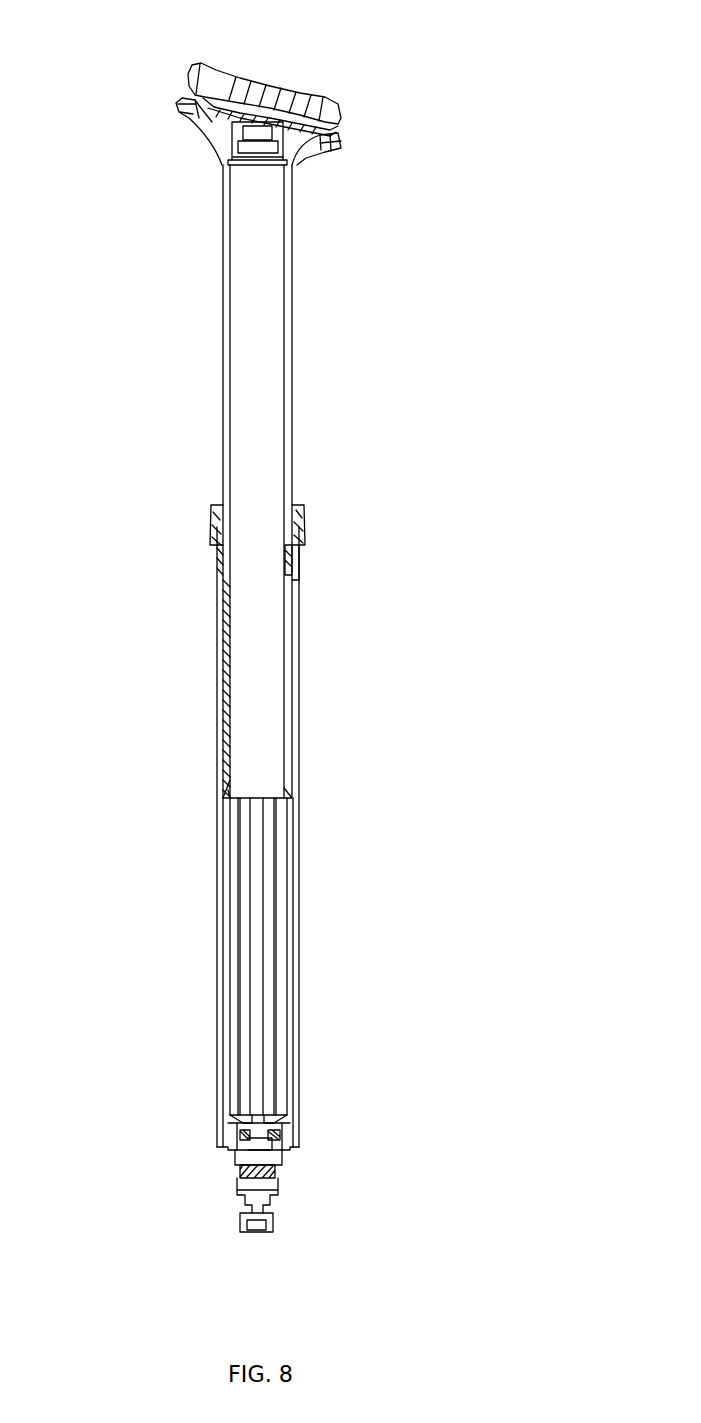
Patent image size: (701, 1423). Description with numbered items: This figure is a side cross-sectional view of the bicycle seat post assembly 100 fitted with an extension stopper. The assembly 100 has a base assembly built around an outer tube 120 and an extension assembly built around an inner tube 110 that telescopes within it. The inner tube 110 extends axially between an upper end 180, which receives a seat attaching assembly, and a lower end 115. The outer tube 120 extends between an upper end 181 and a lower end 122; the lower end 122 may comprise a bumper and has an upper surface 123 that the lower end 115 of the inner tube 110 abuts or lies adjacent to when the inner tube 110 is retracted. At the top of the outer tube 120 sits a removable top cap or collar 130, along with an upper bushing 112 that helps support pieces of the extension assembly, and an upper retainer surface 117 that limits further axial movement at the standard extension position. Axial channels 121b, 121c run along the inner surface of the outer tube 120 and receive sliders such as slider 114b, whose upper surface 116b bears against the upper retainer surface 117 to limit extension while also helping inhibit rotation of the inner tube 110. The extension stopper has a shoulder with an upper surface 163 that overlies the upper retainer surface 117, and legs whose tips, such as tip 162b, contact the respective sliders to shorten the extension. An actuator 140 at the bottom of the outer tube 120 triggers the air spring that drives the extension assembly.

The bicycle seat post assembly 100 is at (360, 57).
The upper end of inner tube 180 is at (220, 165).
The inner tube 110 is at (292, 312).
The outer tube 120 is at (298, 762).
The top cap or collar 130 is at (305, 518).
The upper end of outer tube 181 is at (220, 520).
The upper bushing 112 is at (294, 540).
The upper retainer surface 117 is at (292, 570).
The upper surface of shoulder portion 163 is at (222, 572).
The upper surface of slider 116b is at (222, 648).
The tip of leg 162b is at (226, 708).
The slider 114b is at (222, 672).
The lower end of inner tube 115 is at (225, 798).
The axial channel 121b is at (220, 925).
The axial channel 121c is at (255, 972).
The upper surface of lower end 123 is at (280, 1115).
The lower end of outer tube 122 is at (287, 1122).
The actuator 140 is at (277, 1173).